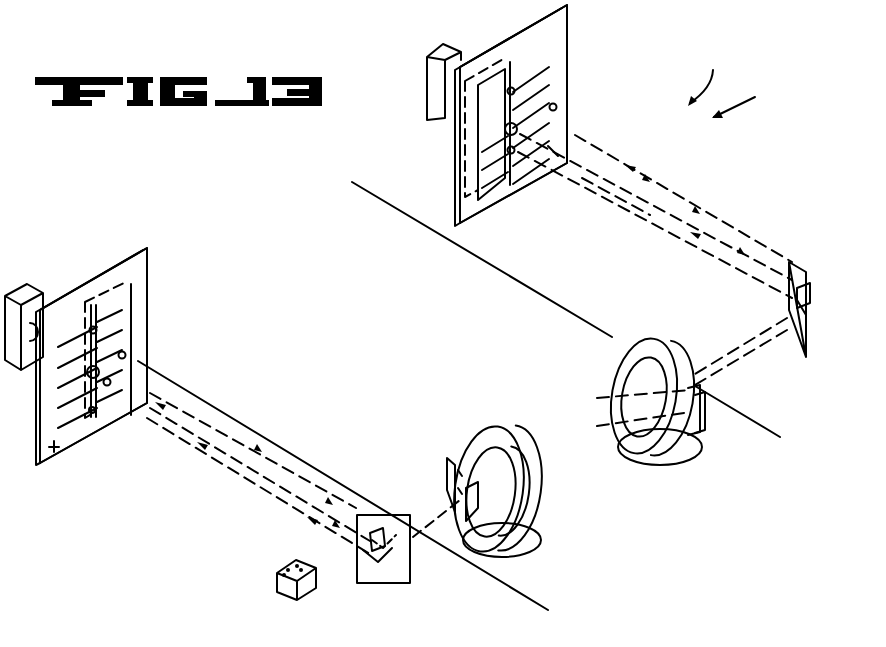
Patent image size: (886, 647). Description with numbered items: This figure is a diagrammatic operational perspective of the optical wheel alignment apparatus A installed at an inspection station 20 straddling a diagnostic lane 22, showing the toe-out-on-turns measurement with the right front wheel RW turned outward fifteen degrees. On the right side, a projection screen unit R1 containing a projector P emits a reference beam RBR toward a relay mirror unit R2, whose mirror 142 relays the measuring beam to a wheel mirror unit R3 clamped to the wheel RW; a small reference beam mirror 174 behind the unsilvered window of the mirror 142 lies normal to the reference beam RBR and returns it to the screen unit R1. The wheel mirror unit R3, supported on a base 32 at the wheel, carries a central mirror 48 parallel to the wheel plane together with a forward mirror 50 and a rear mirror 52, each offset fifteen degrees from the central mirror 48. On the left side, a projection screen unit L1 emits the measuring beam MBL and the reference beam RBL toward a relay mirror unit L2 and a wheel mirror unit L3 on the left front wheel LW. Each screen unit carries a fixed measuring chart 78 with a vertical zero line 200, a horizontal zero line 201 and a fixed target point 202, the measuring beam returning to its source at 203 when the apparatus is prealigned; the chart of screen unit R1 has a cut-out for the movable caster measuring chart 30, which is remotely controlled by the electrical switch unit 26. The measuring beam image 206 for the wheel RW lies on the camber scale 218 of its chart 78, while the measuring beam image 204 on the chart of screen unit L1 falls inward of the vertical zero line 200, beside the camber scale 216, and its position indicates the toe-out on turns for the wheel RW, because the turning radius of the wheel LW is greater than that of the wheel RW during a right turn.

The inspection station 20 is at (752, 99).
The diagnostic lane 22 is at (498, 272).
The electrical switch unit 26 is at (277, 586).
The movable caster measuring chart 30 is at (478, 166).
The wheel support / base 32 is at (670, 463).
The central mirror 48 is at (458, 490).
The forward mirror 50 is at (458, 470).
The rear mirror 52 is at (705, 437).
The fixed measuring chart 78 is at (553, 58).
The mirror 142 is at (802, 342).
The reference beam mirror 174 is at (808, 300).
The vertical zero line 200 is at (513, 188).
The horizontal zero line 201 is at (556, 107).
The fixed target point 202 is at (513, 92).
The measuring beam source 203 is at (505, 130).
The measuring beam image 204 is at (108, 385).
The measuring beam image 206 is at (514, 152).
The camber scale 216 is at (73, 440).
The camber scale 218 is at (553, 148).
The optical wheel alignment apparatus A is at (709, 73).
The projector P is at (427, 96).
The projection screen unit R1 is at (558, 35).
The relay mirror unit R2 is at (787, 275).
The wheel mirror unit R3 is at (702, 390).
The right front wheel RW is at (655, 346).
The reference beam RBR is at (648, 192).
The projection screen unit L1 is at (135, 248).
The relay mirror unit L2 is at (355, 552).
The wheel mirror unit L3 is at (447, 472).
The left front wheel LW is at (530, 492).
The reference beam RBL is at (225, 428).
The measuring beam MBL is at (278, 480).